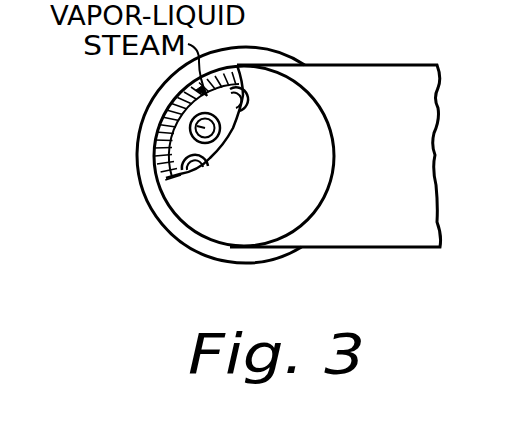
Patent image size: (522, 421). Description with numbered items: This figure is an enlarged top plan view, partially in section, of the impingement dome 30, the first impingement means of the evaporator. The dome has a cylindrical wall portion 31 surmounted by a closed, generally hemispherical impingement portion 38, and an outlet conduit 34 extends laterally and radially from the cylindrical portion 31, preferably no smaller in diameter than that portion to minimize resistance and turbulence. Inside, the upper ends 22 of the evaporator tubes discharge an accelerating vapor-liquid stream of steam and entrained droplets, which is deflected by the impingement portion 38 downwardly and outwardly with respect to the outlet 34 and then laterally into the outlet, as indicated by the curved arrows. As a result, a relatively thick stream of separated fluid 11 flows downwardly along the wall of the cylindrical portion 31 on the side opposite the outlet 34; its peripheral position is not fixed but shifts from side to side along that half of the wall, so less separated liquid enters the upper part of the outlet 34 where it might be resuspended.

The stream of separated fluid 11 is at (165, 112).
The upper end of tubes 22 is at (222, 133).
The impingement dome 30 is at (138, 187).
The cylindrical wall portion 31 is at (163, 141).
The outlet conduit 34 is at (370, 225).
The impingement portion 38 is at (268, 92).